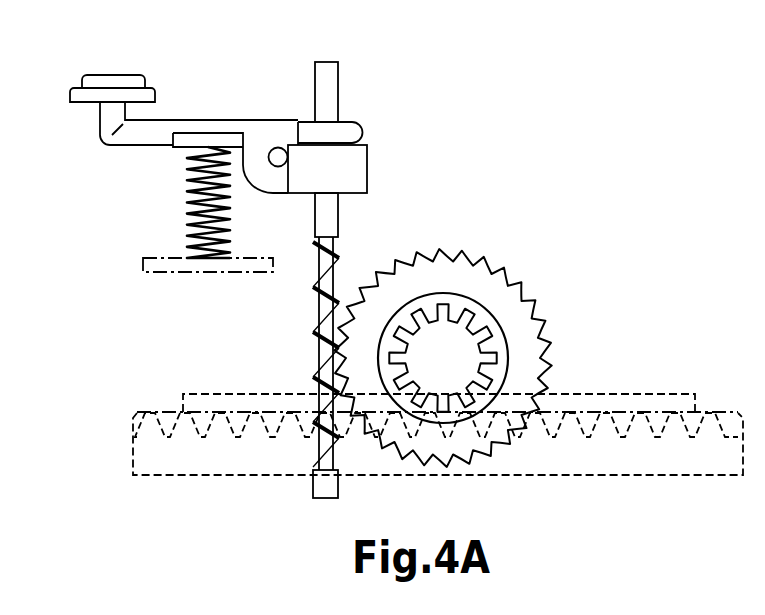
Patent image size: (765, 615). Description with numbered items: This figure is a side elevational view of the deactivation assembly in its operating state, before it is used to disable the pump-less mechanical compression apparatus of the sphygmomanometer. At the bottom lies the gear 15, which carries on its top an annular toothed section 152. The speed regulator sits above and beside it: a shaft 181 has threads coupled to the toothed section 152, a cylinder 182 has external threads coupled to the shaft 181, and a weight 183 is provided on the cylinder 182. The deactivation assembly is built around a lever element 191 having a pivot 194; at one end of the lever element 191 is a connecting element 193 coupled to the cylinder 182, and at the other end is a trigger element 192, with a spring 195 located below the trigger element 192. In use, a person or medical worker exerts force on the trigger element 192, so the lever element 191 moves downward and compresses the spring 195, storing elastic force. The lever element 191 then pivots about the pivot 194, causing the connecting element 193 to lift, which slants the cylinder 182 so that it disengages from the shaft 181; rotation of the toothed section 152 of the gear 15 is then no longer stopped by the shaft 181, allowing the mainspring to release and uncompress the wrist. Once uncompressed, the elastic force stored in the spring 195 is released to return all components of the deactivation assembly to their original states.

The gear 15 is at (632, 465).
The toothed section 152 is at (575, 412).
The shaft 181 is at (492, 290).
The cylinder 182 is at (318, 318).
The weight 183 is at (360, 172).
The lever element 191 is at (162, 130).
The trigger element 192 is at (112, 73).
The connecting element 193 is at (327, 132).
The pivot 194 is at (280, 148).
The spring 195 is at (193, 210).